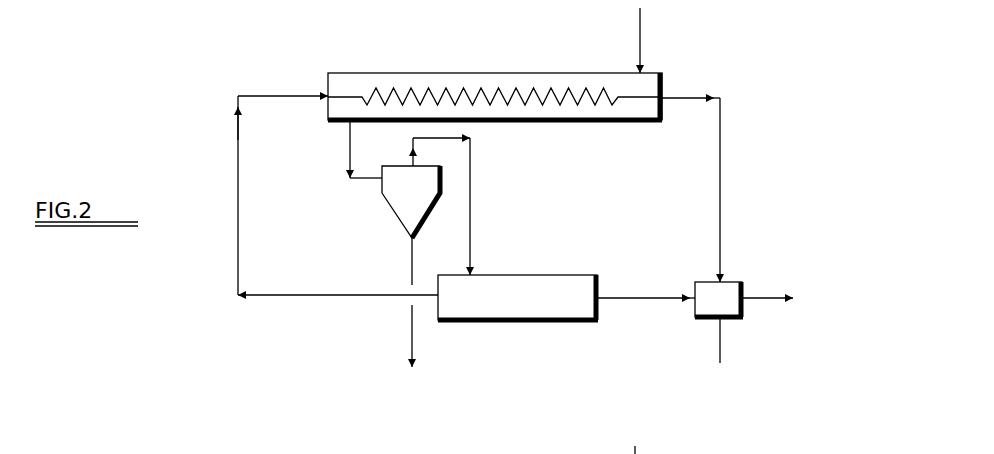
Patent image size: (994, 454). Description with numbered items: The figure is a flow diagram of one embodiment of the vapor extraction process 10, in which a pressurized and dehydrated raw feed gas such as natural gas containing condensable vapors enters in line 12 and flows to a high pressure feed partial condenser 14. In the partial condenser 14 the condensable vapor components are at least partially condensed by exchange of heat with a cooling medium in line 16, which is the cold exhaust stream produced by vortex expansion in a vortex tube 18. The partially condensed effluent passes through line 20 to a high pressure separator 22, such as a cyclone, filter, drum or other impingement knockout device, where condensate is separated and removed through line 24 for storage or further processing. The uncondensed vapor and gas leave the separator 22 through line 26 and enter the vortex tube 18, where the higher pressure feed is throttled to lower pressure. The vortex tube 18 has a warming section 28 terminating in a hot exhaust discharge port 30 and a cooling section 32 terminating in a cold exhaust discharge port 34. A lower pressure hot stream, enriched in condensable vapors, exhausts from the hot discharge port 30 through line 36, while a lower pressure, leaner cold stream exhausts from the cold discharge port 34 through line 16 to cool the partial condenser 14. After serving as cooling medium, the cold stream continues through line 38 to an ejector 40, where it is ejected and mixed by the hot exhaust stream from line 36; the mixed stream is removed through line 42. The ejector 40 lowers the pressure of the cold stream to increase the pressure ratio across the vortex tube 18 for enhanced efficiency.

The vapor extraction process 10 is at (222, 344).
The line 12 is at (640, 28).
The high pressure feed partial condenser 14 is at (460, 73).
The line 16 is at (327, 297).
The vortex tube 18 is at (518, 331).
The line 20 is at (350, 148).
The high pressure separator 22 is at (394, 217).
The line 24 is at (410, 330).
The line 26 is at (438, 136).
The warming section 28 is at (568, 295).
The hot exhaust discharge port 30 is at (600, 308).
The cooling section 32 is at (489, 292).
The cold exhaust discharge port 34 is at (438, 298).
The line 36 is at (620, 292).
The line 38 is at (720, 150).
The ejector 40 is at (735, 280).
The line 42 is at (758, 296).